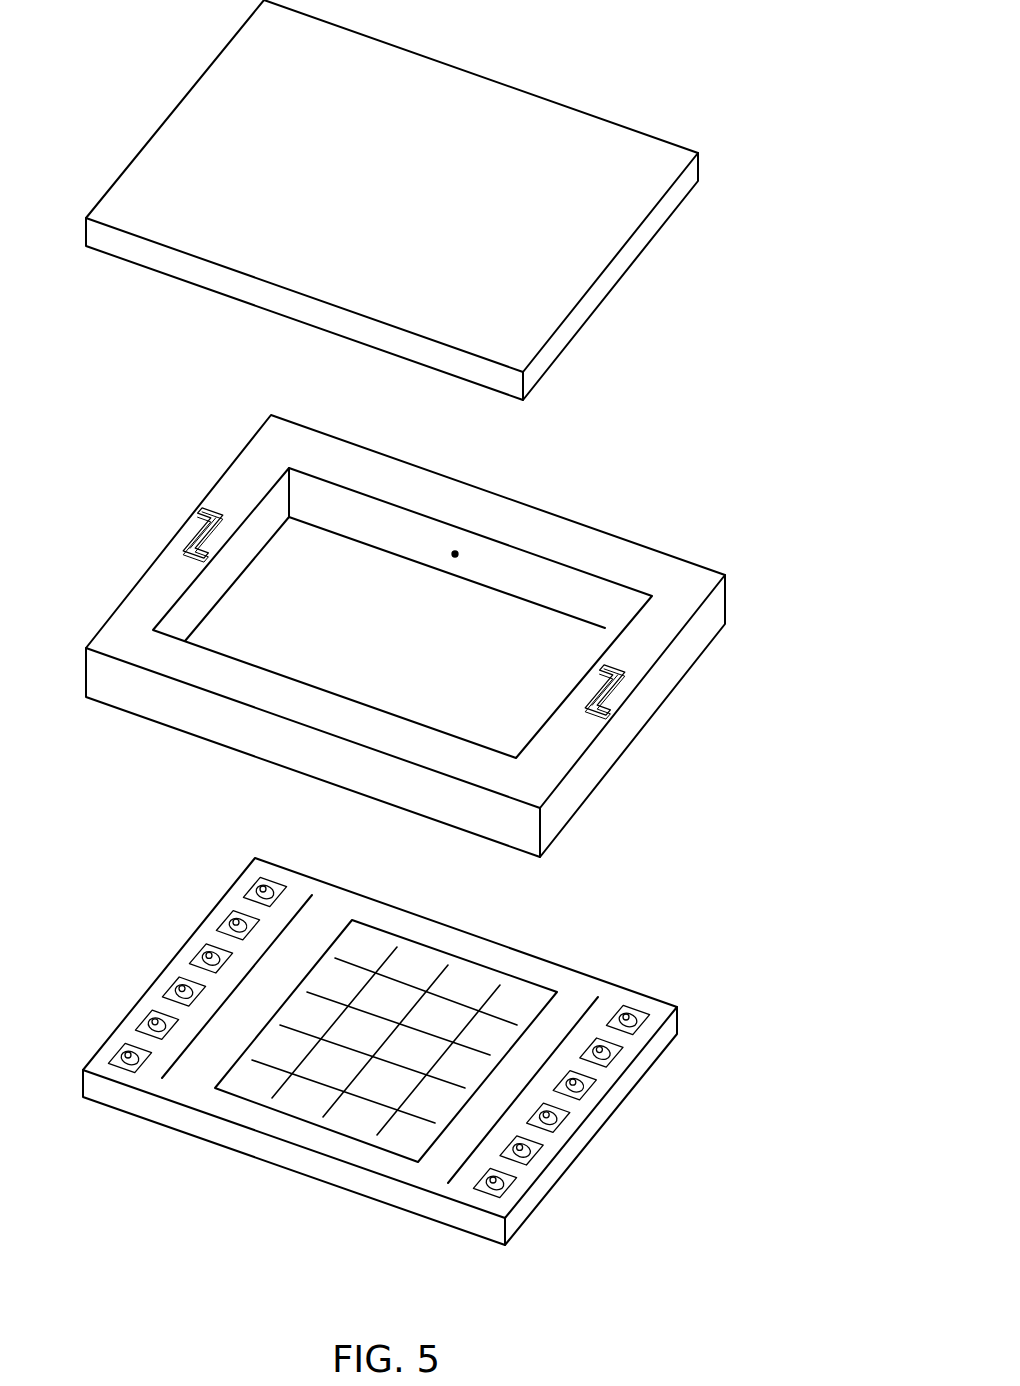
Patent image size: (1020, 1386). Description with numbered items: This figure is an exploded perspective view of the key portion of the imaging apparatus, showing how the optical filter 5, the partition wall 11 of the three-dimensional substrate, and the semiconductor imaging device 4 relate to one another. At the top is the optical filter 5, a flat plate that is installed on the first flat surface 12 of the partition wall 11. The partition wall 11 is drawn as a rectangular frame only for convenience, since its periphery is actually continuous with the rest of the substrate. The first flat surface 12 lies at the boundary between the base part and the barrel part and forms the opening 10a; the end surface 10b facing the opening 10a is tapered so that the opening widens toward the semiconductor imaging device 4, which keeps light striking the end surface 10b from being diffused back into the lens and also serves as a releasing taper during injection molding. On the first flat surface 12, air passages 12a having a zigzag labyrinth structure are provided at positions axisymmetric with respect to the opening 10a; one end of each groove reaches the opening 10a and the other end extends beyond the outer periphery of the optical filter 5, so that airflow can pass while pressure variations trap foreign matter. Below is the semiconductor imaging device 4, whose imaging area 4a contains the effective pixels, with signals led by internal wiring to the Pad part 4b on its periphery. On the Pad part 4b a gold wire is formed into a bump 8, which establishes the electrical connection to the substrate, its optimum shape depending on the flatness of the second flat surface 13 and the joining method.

The optical filter 5 is at (610, 282).
The partition wall 11 is at (717, 613).
The second flat surface 13 is at (668, 702).
The first flat surface 12 is at (523, 783).
The opening 10a is at (512, 655).
The end surface 10b is at (455, 554).
The air passage 12a is at (628, 712).
The semiconductor imaging device 4 is at (432, 1178).
The imaging area 4a is at (367, 1098).
The Pad part 4b is at (530, 1162).
The bump 8 is at (503, 1190).